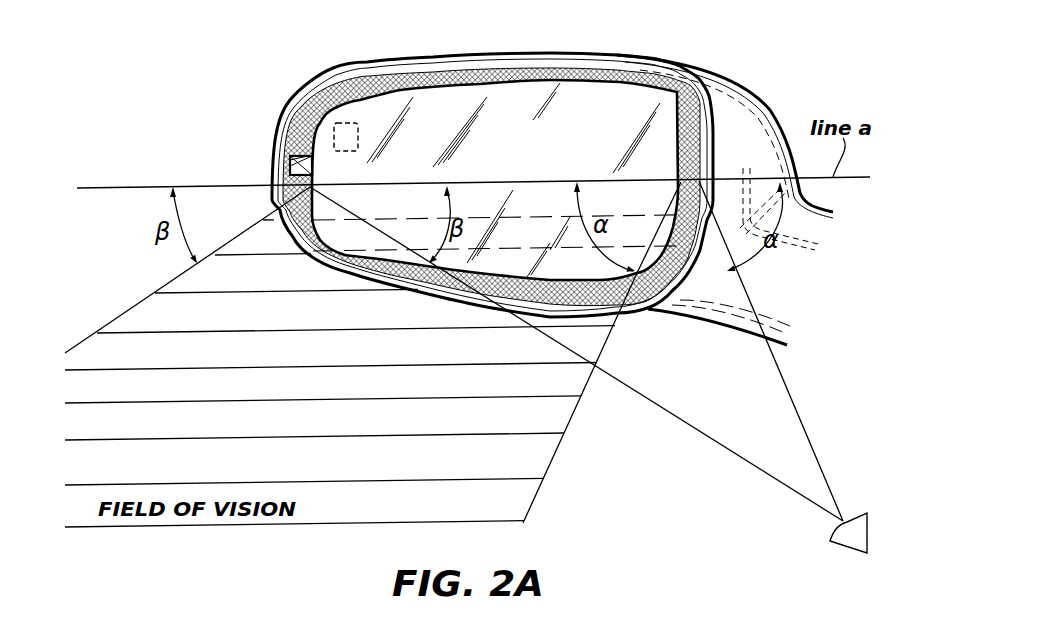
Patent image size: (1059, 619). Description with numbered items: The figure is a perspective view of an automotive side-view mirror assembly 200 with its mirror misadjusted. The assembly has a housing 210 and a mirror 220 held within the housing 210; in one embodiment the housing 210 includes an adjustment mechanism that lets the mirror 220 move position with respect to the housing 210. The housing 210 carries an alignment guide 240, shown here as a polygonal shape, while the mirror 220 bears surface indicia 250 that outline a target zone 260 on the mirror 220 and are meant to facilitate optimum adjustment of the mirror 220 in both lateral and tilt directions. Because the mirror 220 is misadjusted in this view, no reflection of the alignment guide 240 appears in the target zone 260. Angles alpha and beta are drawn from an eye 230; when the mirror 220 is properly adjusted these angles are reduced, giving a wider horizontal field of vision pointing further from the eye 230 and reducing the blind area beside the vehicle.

The side-view mirror assembly 200 is at (680, 48).
The housing 210 is at (766, 96).
The mirror 220 is at (317, 93).
The eye 230 is at (830, 540).
The alignment guide 240 is at (288, 163).
The surface indicia 250 is at (333, 135).
The target zone 260 is at (307, 110).